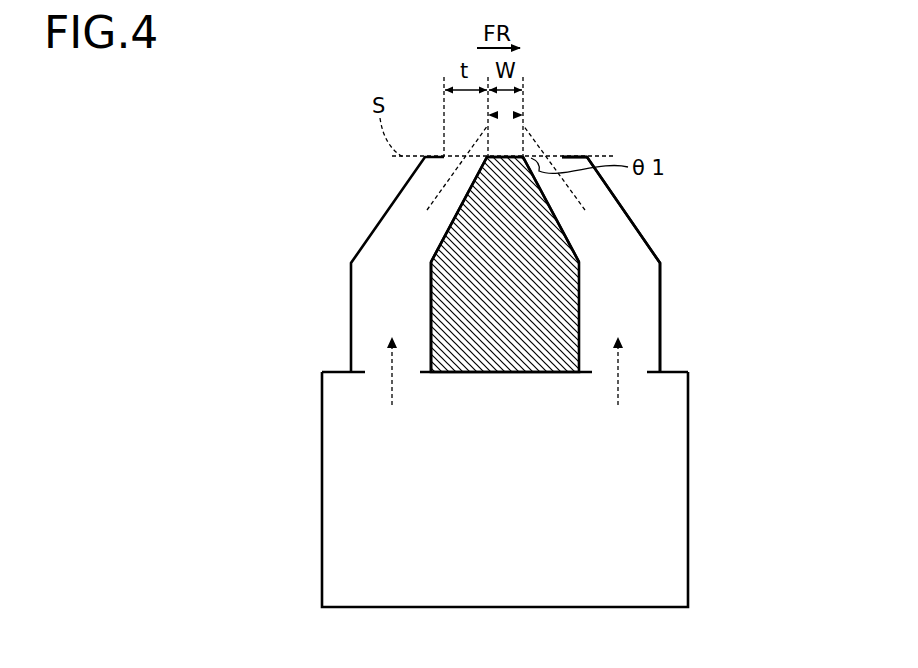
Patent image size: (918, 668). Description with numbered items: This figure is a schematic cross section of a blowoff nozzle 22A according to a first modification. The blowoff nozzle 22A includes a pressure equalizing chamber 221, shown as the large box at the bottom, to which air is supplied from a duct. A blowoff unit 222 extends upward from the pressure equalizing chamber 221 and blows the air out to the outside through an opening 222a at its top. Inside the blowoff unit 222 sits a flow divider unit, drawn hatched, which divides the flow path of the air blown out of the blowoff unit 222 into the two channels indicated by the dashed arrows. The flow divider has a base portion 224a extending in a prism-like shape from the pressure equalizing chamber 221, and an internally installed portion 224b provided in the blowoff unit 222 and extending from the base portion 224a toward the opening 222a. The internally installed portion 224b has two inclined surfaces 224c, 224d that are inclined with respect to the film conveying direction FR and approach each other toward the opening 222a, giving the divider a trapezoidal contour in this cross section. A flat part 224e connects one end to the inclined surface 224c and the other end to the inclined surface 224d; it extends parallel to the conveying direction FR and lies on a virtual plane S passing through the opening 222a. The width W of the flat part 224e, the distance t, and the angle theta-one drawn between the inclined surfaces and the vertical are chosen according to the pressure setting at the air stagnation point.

The blowoff nozzle 22A is at (690, 312).
The pressure equalizing chamber 221 is at (668, 490).
The blowoff unit 222 is at (622, 247).
The opening 222a is at (557, 154).
The base portion 224a is at (445, 312).
The internally installed portion 224b is at (457, 230).
The inclined surface 224c is at (440, 247).
The inclined surface 224d is at (566, 232).
The flat part 224e is at (505, 155).